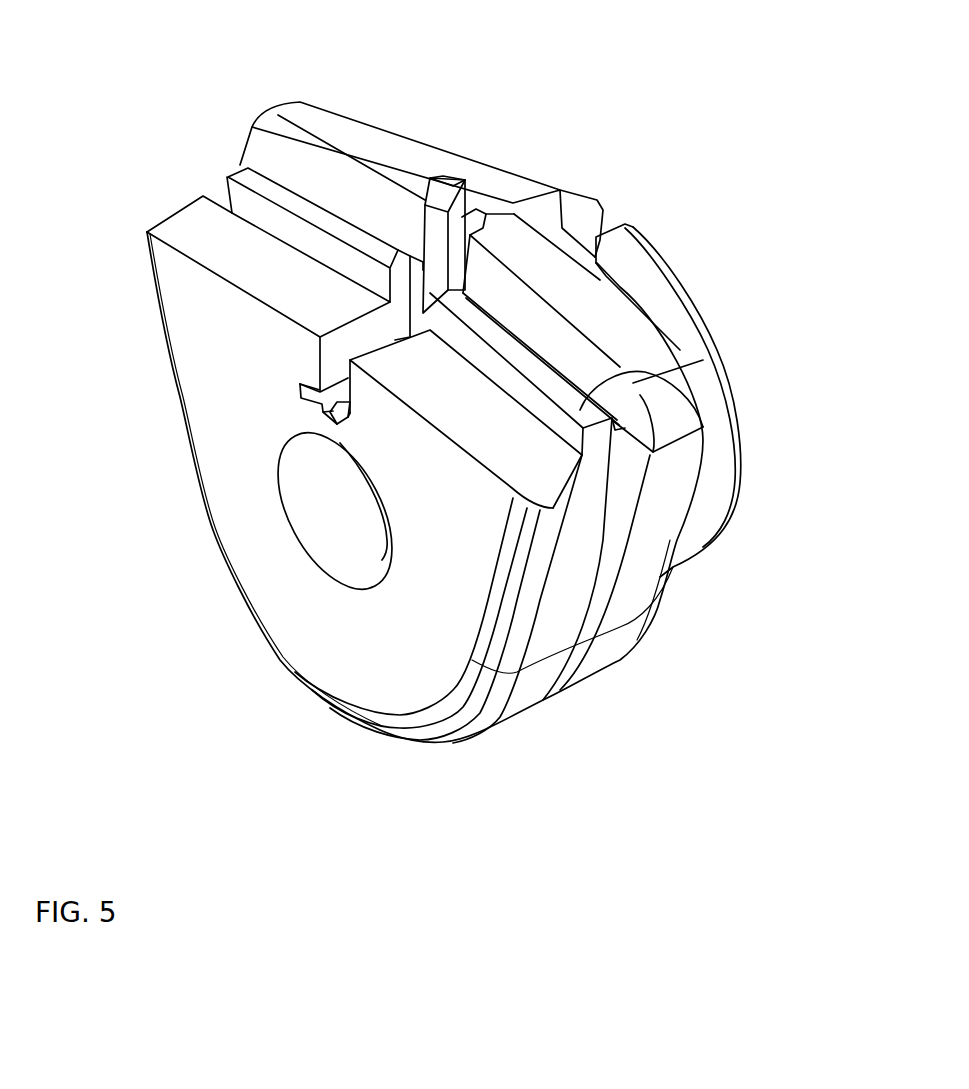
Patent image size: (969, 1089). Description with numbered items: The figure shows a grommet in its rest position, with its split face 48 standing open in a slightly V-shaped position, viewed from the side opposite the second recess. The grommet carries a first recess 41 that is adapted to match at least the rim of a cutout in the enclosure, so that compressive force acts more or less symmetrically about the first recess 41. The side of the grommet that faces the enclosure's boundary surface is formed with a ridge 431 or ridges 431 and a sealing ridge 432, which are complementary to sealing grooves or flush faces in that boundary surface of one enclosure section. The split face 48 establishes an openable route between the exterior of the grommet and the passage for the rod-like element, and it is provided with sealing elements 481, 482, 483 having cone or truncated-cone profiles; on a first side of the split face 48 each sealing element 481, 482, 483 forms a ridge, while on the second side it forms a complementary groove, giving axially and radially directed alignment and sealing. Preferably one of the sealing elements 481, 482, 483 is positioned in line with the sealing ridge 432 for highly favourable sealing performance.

The first recess 41 is at (588, 610).
The split face 48 is at (337, 353).
The ridge 431 is at (200, 238).
The sealing ridge 432 is at (228, 178).
The sealing element 481 is at (317, 400).
The sealing element 482 is at (448, 190).
The sealing element 483 is at (397, 262).